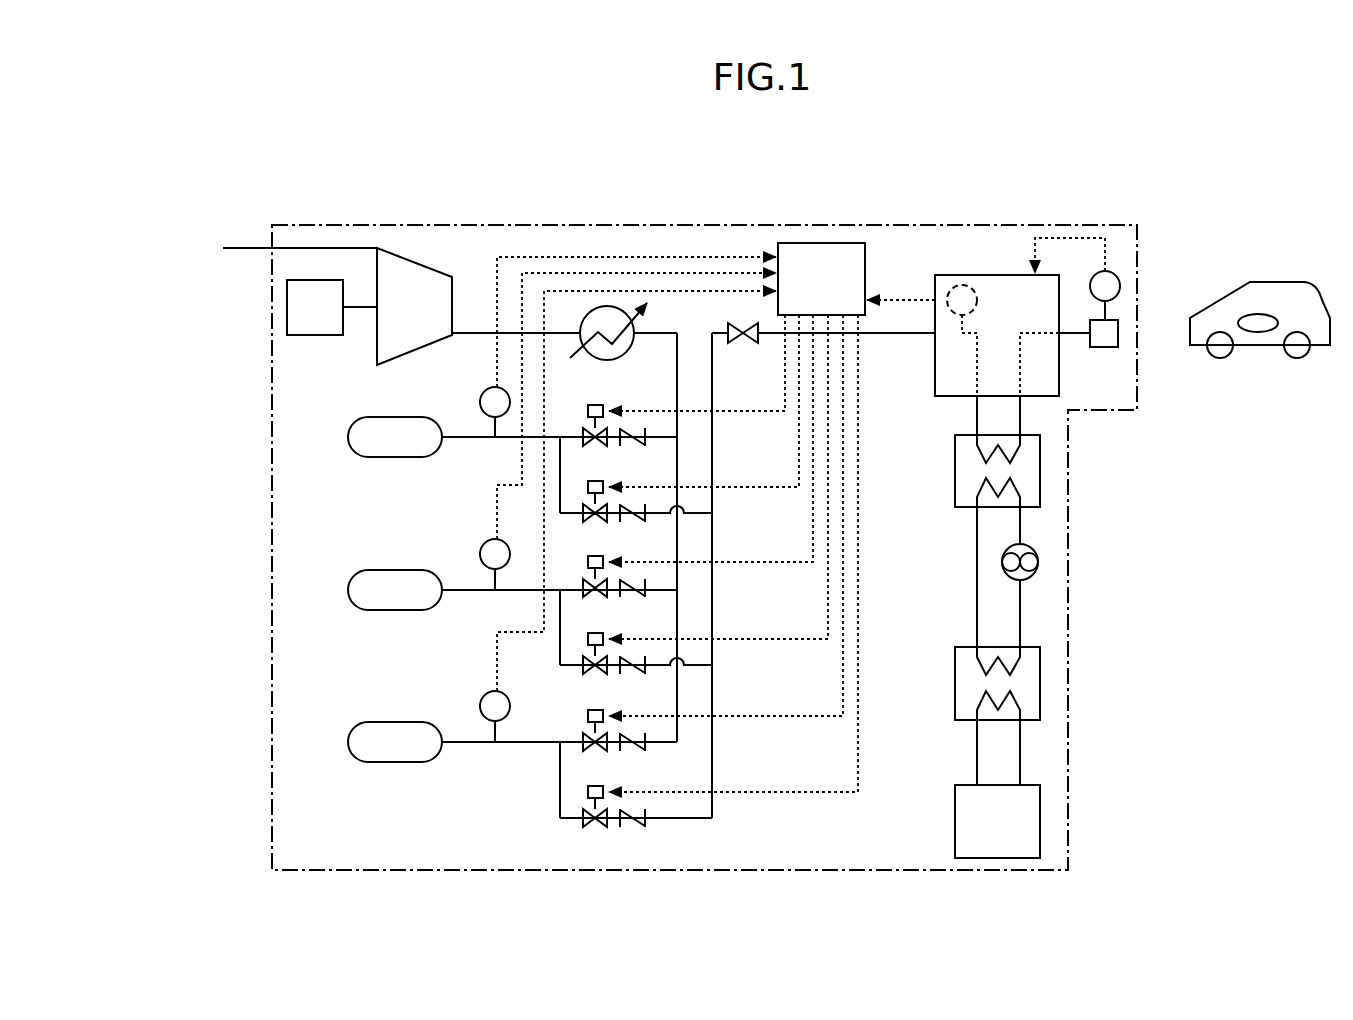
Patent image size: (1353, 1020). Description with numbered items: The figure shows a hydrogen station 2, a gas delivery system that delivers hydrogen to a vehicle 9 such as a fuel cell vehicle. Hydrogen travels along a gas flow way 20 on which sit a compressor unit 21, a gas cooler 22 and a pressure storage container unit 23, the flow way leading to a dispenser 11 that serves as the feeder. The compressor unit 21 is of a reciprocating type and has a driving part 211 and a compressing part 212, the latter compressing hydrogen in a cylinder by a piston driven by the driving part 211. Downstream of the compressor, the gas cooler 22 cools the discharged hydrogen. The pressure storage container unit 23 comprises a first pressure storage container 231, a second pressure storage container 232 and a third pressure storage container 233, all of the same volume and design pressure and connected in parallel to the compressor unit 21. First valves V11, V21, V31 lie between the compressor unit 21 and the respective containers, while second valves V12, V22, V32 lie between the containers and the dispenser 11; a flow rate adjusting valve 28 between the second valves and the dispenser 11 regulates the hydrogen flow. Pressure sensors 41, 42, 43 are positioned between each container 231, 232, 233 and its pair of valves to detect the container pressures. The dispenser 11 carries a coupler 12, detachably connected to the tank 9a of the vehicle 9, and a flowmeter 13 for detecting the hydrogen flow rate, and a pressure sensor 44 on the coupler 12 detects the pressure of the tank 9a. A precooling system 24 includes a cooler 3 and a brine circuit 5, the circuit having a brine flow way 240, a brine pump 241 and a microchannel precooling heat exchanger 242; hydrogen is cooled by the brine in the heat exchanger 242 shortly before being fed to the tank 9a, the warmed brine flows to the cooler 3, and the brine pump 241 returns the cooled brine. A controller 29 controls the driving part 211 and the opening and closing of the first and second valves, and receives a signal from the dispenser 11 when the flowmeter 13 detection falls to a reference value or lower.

The hydrogen station 2 is at (907, 220).
The gas flow way 20 is at (310, 247).
The compressor unit 21 is at (393, 250).
The driving part 211 is at (330, 280).
The compressing part 212 is at (360, 184).
The gas cooler 22 is at (608, 304).
The flow rate adjusting valve 28 is at (734, 320).
The controller 29 is at (846, 243).
The dispenser 11 is at (987, 273).
The flowmeter 13 is at (955, 288).
The pressure sensor 44 is at (1121, 283).
The coupler 12 is at (1119, 330).
The vehicle 9 is at (1260, 352).
The tank 9a is at (1262, 332).
The pressure storage container unit 23 is at (302, 589).
The first pressure storage container 231 is at (358, 455).
The second pressure storage container 232 is at (348, 590).
The third pressure storage container 233 is at (327, 728).
The pressure sensor 41 is at (486, 391).
The pressure sensor 42 is at (486, 543).
The pressure sensor 43 is at (486, 695).
The first valve V11 is at (603, 405).
The second valve V12 is at (603, 481).
The first valve V21 is at (603, 556).
The second valve V22 is at (603, 633).
The first valve V31 is at (603, 710).
The second valve V32 is at (603, 786).
The precooling system 24 is at (1108, 627).
The brine circuit 5 is at (1081, 590).
The precooling heat exchanger 242 is at (1041, 472).
The brine pump 241 is at (1039, 560).
The brine flow way 240 is at (1168, 493).
The cooler 3 is at (1030, 755).